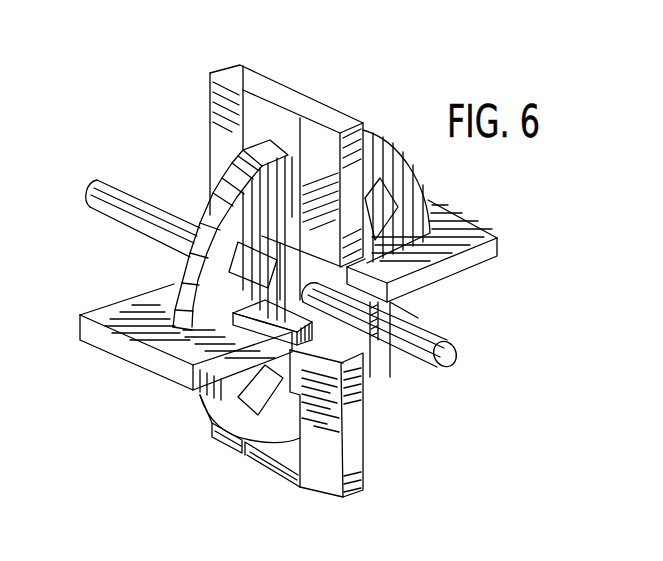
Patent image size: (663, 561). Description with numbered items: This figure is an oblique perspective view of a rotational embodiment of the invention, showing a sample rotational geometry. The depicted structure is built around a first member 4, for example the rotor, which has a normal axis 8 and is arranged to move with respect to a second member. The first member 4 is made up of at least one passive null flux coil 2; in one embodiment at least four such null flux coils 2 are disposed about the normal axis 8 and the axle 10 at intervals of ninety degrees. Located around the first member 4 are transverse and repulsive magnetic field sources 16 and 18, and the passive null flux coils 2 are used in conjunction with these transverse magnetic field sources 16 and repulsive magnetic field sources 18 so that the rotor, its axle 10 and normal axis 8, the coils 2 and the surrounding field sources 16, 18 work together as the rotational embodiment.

The axle 10 is at (306, 259).
The transverse magnetic field source 16 is at (262, 118).
The null flux coil 2 is at (227, 265).
The first member 4 is at (187, 257).
The normal axis 8 is at (457, 352).
The repulsive magnetic field source 18 is at (390, 193).